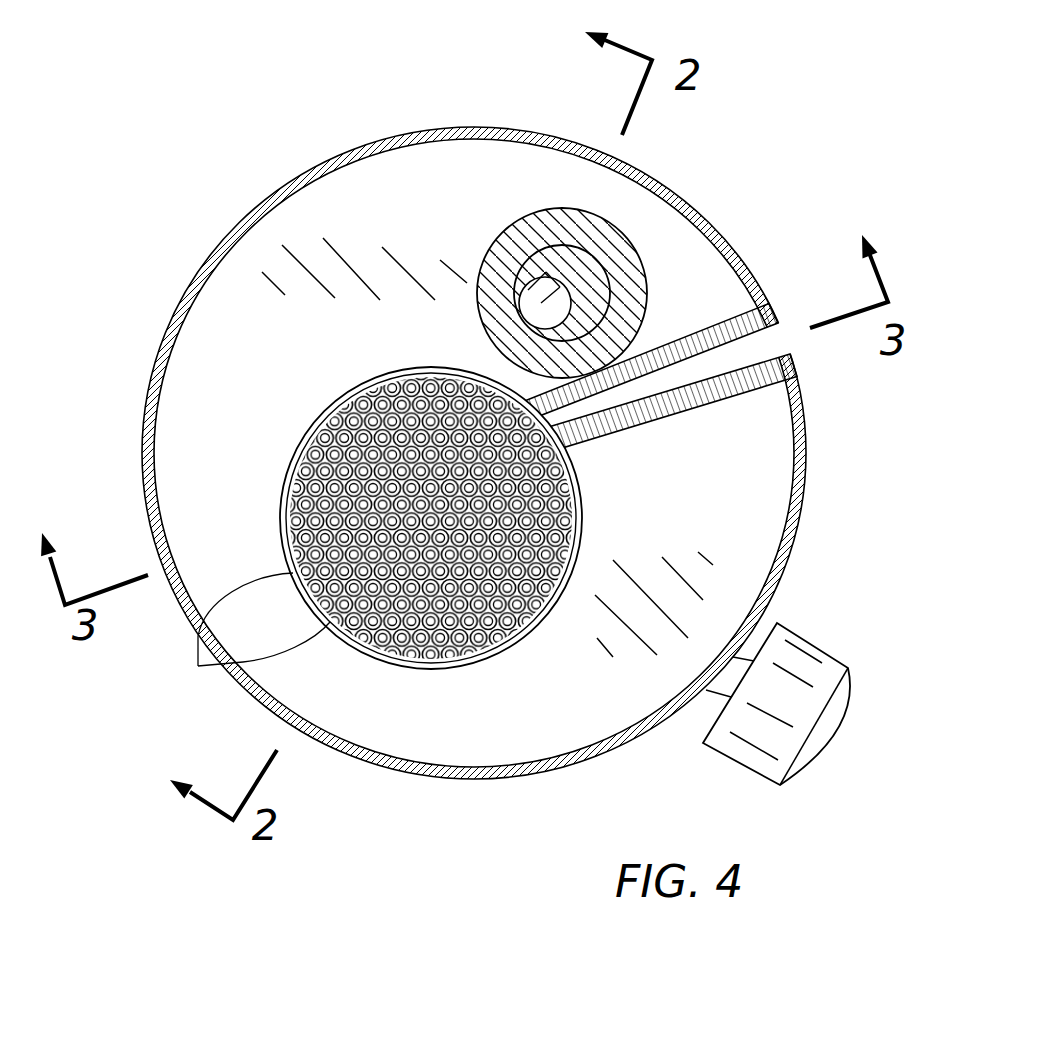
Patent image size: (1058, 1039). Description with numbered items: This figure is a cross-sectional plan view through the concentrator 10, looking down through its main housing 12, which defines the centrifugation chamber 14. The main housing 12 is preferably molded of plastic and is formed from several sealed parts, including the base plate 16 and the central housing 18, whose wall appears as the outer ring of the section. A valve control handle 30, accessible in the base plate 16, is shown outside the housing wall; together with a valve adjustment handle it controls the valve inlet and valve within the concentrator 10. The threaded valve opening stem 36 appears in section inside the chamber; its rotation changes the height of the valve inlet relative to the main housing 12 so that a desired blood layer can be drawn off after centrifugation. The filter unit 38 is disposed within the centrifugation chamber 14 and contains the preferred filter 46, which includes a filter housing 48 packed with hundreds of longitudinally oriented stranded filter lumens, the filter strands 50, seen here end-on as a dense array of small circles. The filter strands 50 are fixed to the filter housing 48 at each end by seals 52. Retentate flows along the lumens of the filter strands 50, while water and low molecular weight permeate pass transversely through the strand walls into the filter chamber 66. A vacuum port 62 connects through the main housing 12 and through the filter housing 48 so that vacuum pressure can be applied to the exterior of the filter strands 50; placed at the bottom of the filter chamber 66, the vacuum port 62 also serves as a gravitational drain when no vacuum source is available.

The concentrator 10 is at (442, 437).
The main housing 12 is at (186, 264).
The centrifugation chamber 14 is at (243, 412).
The base plate 16 is at (385, 218).
The central housing 18 is at (233, 222).
The valve control handle 30 is at (833, 648).
The threaded valve opening stem 36 is at (574, 253).
The filter unit 38 is at (313, 420).
The filter 46 is at (285, 493).
The filter housing 48 is at (283, 538).
The filter strands 50 is at (255, 631).
The seals 52 is at (352, 627).
The vacuum port 62 is at (789, 356).
The filter chamber 66 is at (498, 655).